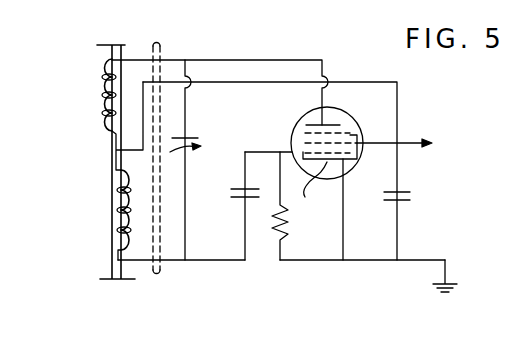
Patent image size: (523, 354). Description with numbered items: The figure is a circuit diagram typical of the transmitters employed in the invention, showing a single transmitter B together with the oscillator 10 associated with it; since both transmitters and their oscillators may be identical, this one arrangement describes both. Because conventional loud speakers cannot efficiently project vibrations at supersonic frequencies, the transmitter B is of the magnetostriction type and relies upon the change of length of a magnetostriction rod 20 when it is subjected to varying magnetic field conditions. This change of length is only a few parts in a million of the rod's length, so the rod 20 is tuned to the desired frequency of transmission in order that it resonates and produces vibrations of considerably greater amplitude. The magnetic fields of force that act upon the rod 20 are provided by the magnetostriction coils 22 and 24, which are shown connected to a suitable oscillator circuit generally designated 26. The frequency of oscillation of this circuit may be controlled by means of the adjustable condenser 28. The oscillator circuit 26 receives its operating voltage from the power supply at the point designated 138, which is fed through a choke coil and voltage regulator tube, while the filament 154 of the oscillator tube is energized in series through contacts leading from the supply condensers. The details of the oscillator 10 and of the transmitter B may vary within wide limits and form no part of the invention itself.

The oscillator 10 is at (283, 276).
The magnetostriction rod 20 is at (165, 40).
The magnetostriction coil 22 is at (98, 105).
The magnetostriction coil 24 is at (119, 209).
The oscillator circuit 26 is at (373, 115).
The adjustable condenser 28 is at (204, 142).
The voltage supply point 138 is at (432, 142).
The filament 154 is at (316, 187).
The transmitter B is at (72, 66).